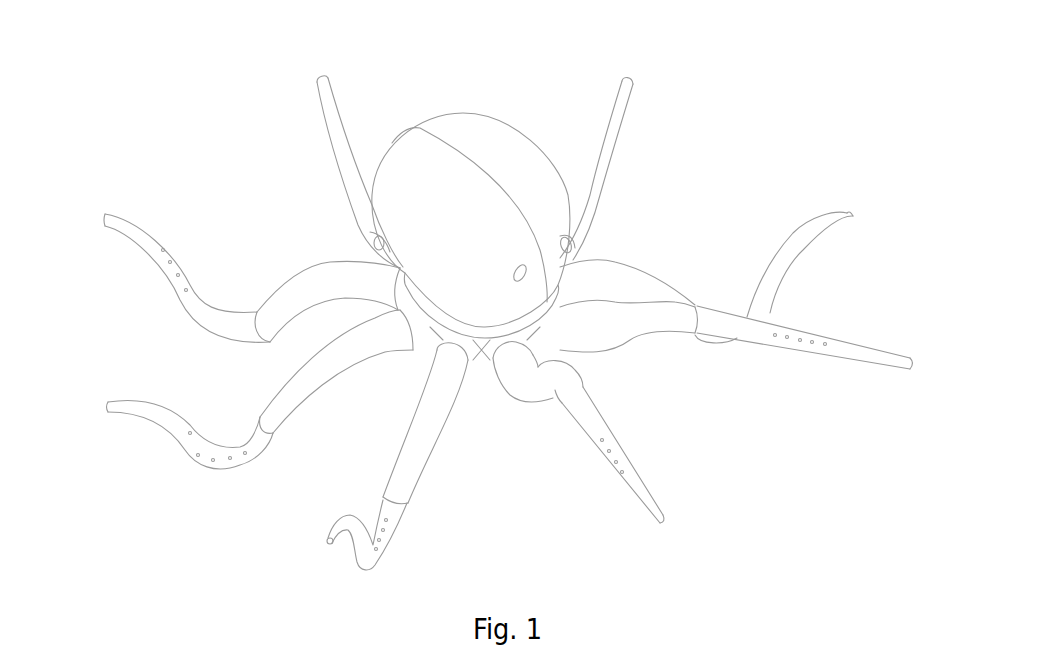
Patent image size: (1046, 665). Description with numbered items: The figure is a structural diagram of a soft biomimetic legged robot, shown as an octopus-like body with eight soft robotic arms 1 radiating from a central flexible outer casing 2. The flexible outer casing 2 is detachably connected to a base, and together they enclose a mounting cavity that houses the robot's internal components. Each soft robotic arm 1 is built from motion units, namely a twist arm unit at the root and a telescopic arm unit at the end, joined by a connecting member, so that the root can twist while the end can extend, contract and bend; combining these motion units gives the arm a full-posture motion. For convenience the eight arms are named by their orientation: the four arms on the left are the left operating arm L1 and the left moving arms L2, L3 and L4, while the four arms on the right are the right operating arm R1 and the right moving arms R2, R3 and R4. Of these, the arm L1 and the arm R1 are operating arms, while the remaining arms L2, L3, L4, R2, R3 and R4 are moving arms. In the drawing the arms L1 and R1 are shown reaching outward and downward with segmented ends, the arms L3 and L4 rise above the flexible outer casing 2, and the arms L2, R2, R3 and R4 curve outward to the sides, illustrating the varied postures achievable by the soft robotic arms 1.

The soft robotic arm 1 is at (761, 356).
The flexible outer casing 2 is at (481, 104).
The left operating arm L1 is at (752, 398).
The left moving arm L2 is at (725, 259).
The left moving arm L3 is at (615, 167).
The left moving arm L4 is at (330, 171).
The right operating arm R1 is at (578, 450).
The right moving arm R2 is at (371, 460).
The right moving arm R3 is at (235, 389).
The right moving arm R4 is at (226, 278).